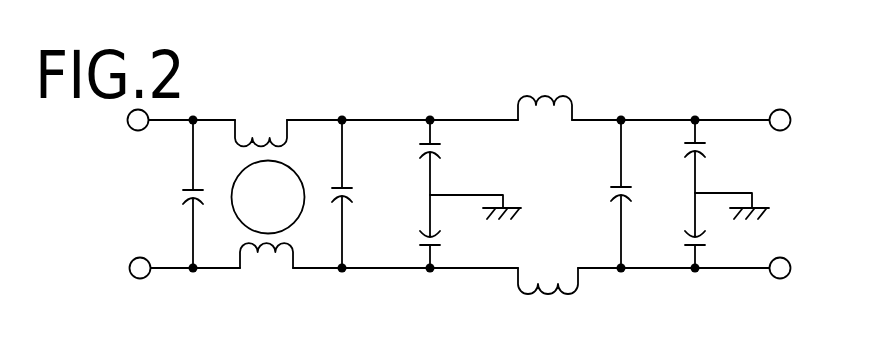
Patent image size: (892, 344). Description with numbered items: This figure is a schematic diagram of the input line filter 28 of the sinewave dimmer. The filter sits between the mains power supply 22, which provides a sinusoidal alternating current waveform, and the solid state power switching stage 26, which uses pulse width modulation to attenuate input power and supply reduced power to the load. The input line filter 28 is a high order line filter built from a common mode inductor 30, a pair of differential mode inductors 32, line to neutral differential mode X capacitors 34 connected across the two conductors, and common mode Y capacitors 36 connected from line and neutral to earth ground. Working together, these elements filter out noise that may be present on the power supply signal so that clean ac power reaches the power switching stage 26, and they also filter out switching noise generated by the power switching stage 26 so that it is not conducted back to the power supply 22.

The mains power supply 22 is at (132, 131).
The solid state power switching stage 26 is at (790, 128).
The input line filter 28 is at (765, 76).
The common mode inductor 30 is at (265, 118).
The differential mode inductors 32 is at (552, 100).
The line to neutral differential mode X capacitors 34 is at (201, 189).
The line/neutral to earth ground common mode Y capacitors 36 is at (441, 150).